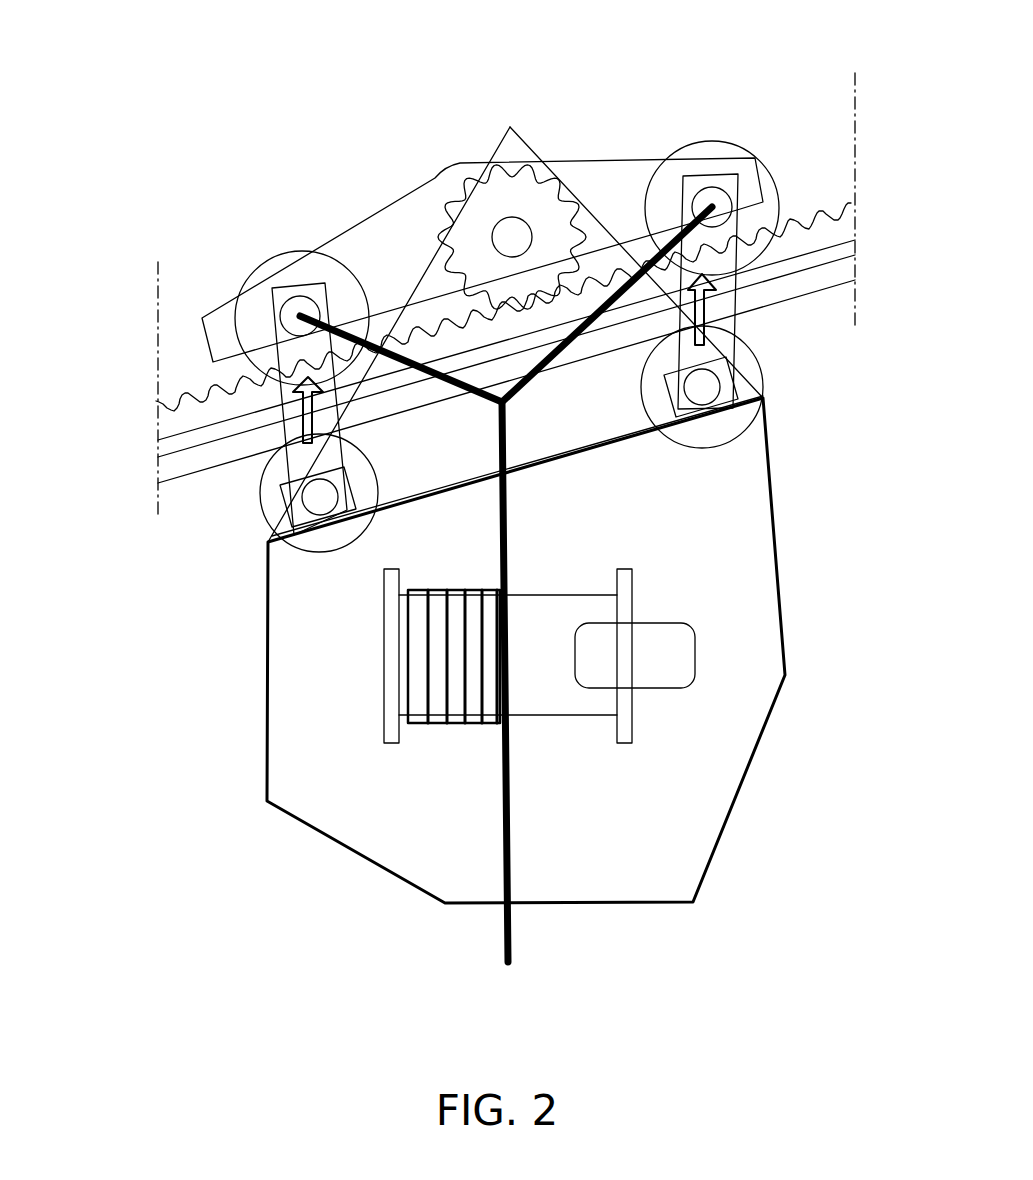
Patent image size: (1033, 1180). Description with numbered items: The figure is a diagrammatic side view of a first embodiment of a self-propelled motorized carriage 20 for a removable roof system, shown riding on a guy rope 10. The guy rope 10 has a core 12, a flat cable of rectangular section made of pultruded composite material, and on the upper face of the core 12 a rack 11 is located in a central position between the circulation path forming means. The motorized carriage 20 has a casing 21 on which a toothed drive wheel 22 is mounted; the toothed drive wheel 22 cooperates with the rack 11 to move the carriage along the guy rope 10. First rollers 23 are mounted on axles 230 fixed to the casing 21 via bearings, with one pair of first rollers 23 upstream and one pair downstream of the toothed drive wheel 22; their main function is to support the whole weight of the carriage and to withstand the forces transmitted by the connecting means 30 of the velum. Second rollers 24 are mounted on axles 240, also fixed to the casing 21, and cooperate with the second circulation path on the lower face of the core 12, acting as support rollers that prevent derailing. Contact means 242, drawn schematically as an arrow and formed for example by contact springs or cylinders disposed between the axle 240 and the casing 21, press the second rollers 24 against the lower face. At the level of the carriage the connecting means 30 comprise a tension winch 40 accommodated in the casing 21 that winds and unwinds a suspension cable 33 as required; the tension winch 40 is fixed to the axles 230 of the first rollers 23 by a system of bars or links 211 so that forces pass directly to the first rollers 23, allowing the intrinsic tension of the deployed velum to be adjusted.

The guy rope 10 is at (442, 295).
The rack 11 is at (172, 432).
The core 12 is at (182, 458).
The motorized carriage 20 is at (228, 136).
The casing 21 is at (445, 172).
The toothed drive wheel 22 is at (540, 207).
The first rollers 23 is at (257, 262).
The axles 230 is at (300, 314).
The second rollers 24 is at (308, 555).
The axles 240 is at (290, 527).
The contact means 242 is at (300, 425).
The bars or links 211 is at (512, 520).
The connecting means 30 is at (822, 893).
The suspension cable 33 is at (513, 930).
The tension winch 40 is at (667, 668).